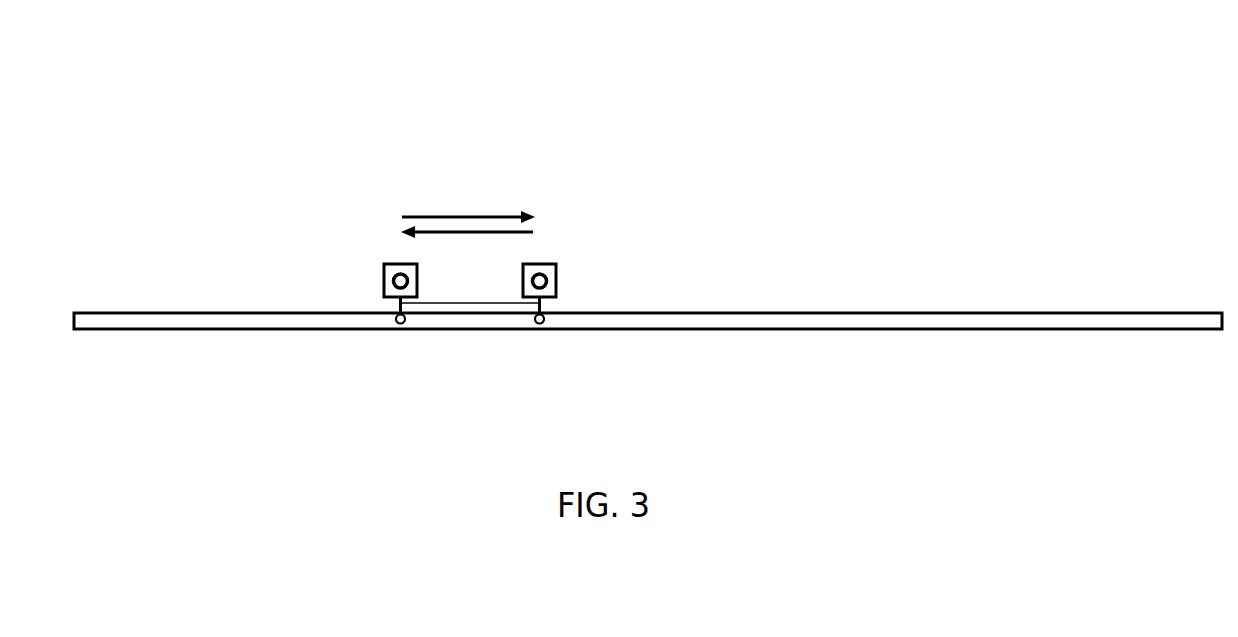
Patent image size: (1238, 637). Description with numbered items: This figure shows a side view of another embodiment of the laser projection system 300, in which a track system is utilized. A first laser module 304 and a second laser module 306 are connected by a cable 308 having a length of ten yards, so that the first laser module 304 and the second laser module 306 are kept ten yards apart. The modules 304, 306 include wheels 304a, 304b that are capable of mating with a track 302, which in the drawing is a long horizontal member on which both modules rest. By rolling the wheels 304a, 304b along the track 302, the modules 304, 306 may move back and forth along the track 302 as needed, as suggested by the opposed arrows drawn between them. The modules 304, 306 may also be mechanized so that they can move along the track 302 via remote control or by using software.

The laser projection system 300 is at (1118, 135).
The track 302 is at (934, 317).
The first laser module 304 is at (555, 265).
The wheels 304a is at (547, 318).
The second carriage wheel / contact point 304b is at (393, 315).
The second laser module 306 is at (385, 267).
The cable 308 is at (450, 300).